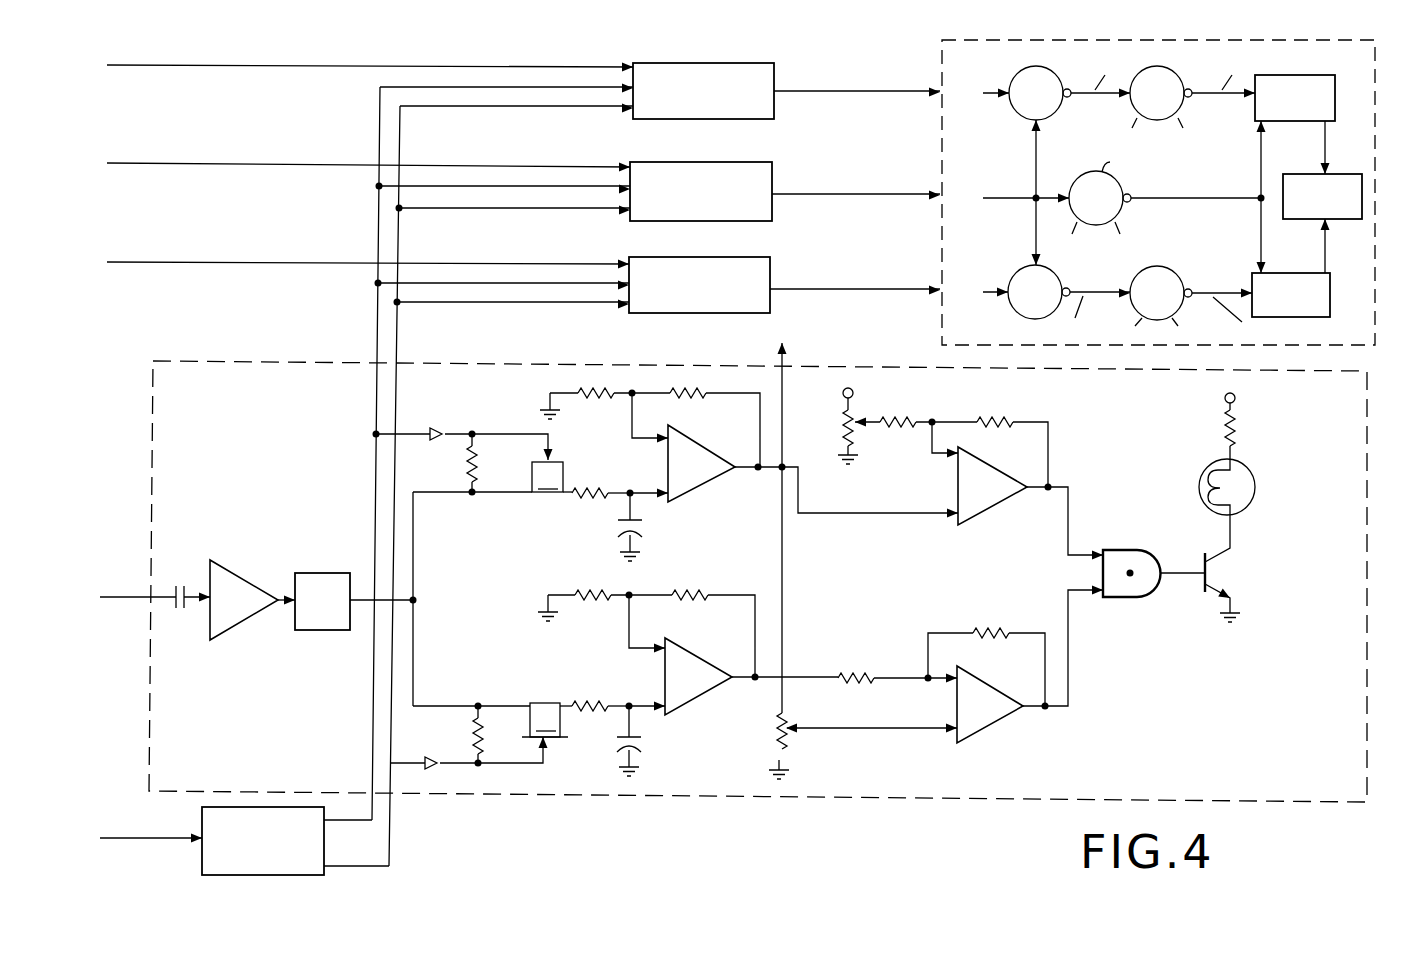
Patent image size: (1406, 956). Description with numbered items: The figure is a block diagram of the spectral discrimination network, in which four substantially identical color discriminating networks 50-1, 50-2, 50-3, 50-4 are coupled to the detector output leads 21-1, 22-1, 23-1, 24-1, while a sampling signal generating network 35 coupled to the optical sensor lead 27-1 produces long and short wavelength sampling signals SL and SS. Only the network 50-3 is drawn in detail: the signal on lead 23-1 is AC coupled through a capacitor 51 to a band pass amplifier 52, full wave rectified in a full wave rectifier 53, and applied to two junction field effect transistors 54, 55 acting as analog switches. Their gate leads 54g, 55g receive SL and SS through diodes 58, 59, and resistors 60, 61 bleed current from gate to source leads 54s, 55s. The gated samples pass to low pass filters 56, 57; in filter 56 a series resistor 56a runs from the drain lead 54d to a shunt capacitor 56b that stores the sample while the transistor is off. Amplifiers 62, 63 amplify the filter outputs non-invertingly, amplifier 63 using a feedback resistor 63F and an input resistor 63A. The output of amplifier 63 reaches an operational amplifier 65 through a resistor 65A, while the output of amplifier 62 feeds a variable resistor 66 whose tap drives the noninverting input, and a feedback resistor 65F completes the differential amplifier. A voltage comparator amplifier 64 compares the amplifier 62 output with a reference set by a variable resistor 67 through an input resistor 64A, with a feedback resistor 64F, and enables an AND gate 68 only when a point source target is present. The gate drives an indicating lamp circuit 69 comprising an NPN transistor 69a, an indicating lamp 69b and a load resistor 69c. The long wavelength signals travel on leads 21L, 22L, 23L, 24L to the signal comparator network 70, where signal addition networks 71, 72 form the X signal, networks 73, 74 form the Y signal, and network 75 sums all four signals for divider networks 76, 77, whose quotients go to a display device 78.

The detector output lead 21-1 is at (115, 63).
The detector output lead 22-1 is at (115, 162).
The detector output lead 24-1 is at (115, 261).
The detector output lead 23-1 is at (102, 601).
The optical sensor output lead 27-1 is at (107, 844).
The color discriminating network 50-1 is at (757, 70).
The color discriminating network 50-2 is at (760, 163).
The color discriminating network 50-3 is at (227, 366).
The color discriminating network 50-4 is at (758, 261).
The output lead 21L is at (822, 96).
The output lead 22L is at (820, 199).
The output lead 23L is at (780, 355).
The output lead 24L is at (818, 294).
The sampling signal generating network 35 is at (316, 876).
The capacitor 51 is at (176, 584).
The band pass amplifier 52 is at (223, 571).
The full wave rectifier 53 is at (335, 578).
The junction field effect transistor 54 is at (538, 458).
The gate lead 54g is at (552, 447).
The source lead 54s is at (533, 470).
The drain lead 54d is at (563, 482).
The junction field effect transistor 55 is at (534, 733).
The source lead 55s is at (533, 709).
The gate lead 55g is at (546, 762).
The low pass filter 56 is at (657, 526).
The series resistor 56a is at (580, 502).
The shunt capacitor 56b is at (612, 530).
The low pass filter 57 is at (586, 709).
The diode 58 is at (447, 433).
The diode 59 is at (434, 758).
The resistor 60 is at (477, 475).
The resistor 61 is at (470, 746).
The amplifier 62 is at (704, 456).
The amplifier 63 is at (646, 644).
The input resistor 63A is at (590, 592).
The feedback resistor 63F is at (680, 592).
The voltage comparator amplifier 64 is at (1003, 460).
The input resistor 64A is at (897, 414).
The feedback resistor 64F is at (997, 414).
The operational amplifier 65 is at (986, 676).
The resistor 65A is at (853, 672).
The feedback resistor 65F is at (992, 628).
The variable resistor 66 is at (772, 727).
The variable resistor 67 is at (844, 425).
The AND gate 68 is at (1150, 553).
The indicating lamp circuit 69 is at (1234, 558).
The NPN transistor 69a is at (1262, 587).
The indicating lamp 69b is at (1254, 471).
The load resistor 69c is at (1237, 429).
The signal comparator and display network 70 is at (1174, 192).
The signal addition network 71 is at (1062, 286).
The signal addition network 72 is at (1187, 286).
The signal addition network 73 is at (1022, 71).
The signal addition network 74 is at (1162, 73).
The signal addition network 75 is at (1126, 184).
The divider network 76 is at (1335, 108).
The divider network 77 is at (1335, 297).
The display device 78 is at (1335, 180).